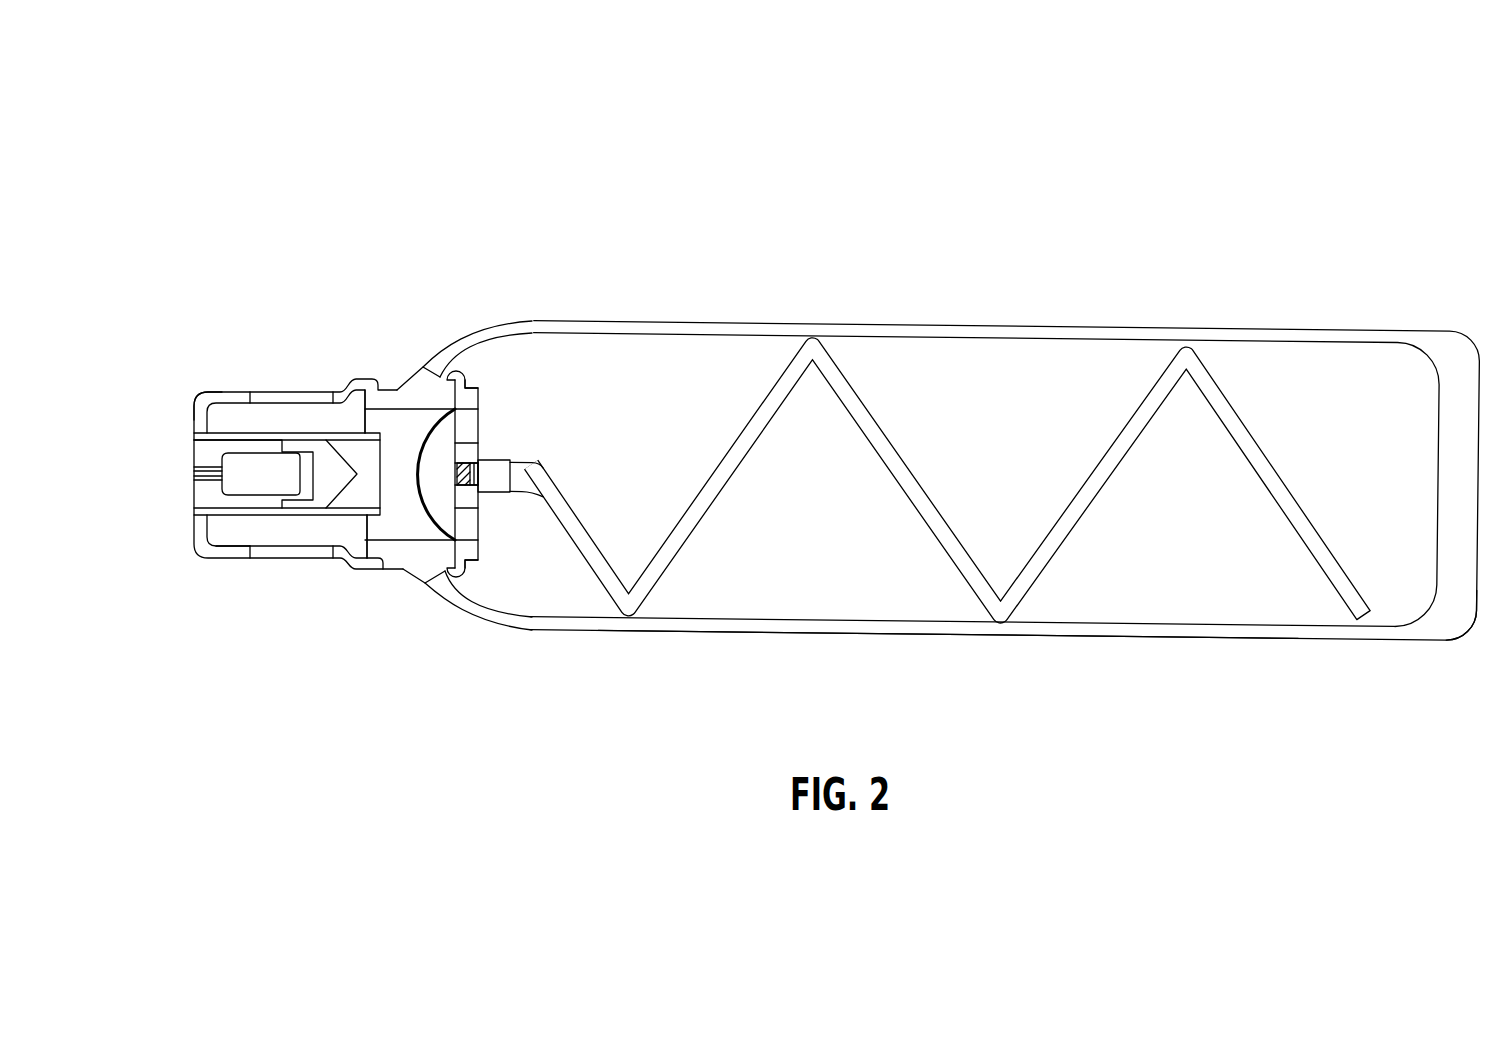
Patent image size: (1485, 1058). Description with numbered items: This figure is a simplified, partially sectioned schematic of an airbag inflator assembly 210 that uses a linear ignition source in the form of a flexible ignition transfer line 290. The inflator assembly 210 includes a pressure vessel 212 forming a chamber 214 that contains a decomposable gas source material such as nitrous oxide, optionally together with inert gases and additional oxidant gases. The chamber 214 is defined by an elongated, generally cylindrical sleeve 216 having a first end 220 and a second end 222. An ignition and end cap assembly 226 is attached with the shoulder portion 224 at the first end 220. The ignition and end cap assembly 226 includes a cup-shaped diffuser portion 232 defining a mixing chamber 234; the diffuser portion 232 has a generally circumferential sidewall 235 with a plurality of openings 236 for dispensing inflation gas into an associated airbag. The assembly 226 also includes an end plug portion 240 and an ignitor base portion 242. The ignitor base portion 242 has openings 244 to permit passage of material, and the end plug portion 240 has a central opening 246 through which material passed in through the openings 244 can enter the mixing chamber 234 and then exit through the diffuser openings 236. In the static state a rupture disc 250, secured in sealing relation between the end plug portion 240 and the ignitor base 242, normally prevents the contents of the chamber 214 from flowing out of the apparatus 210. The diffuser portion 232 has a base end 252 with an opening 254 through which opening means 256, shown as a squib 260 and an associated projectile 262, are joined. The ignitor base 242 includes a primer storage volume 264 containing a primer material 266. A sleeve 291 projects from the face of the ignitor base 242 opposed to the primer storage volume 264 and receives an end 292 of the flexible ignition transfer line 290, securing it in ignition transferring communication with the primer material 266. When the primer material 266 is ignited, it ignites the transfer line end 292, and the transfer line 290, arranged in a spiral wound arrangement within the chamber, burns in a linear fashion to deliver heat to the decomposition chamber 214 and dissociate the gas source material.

The airbag inflator assembly 210 is at (994, 465).
The pressure vessel 212 is at (626, 320).
The chamber 214 is at (997, 385).
The sleeve 216 is at (800, 632).
The first end 220 is at (352, 483).
The second end 222 is at (1408, 668).
The shoulder portion 224 is at (430, 595).
The ignition and end cap assembly 226 is at (271, 447).
The diffuser portion 232 is at (212, 559).
The mixing chamber 234 is at (227, 420).
The sidewall 235 is at (247, 558).
The openings 236 is at (292, 398).
The end plug portion 240 is at (399, 394).
The ignitor base portion 242 is at (477, 390).
The openings 244 is at (479, 430).
The central opening 246 is at (436, 412).
The rupture disc 250 is at (413, 463).
The base end 252 is at (198, 423).
The opening 254 is at (240, 495).
The opening means 256 is at (186, 451).
The squib 260 is at (235, 515).
The projectile 262 is at (343, 490).
The primer storage volume 264 is at (481, 562).
The primer material 266 is at (480, 463).
The flexible ignition transfer line 290 is at (727, 473).
The sleeve 291 is at (511, 459).
The end 292 is at (492, 480).